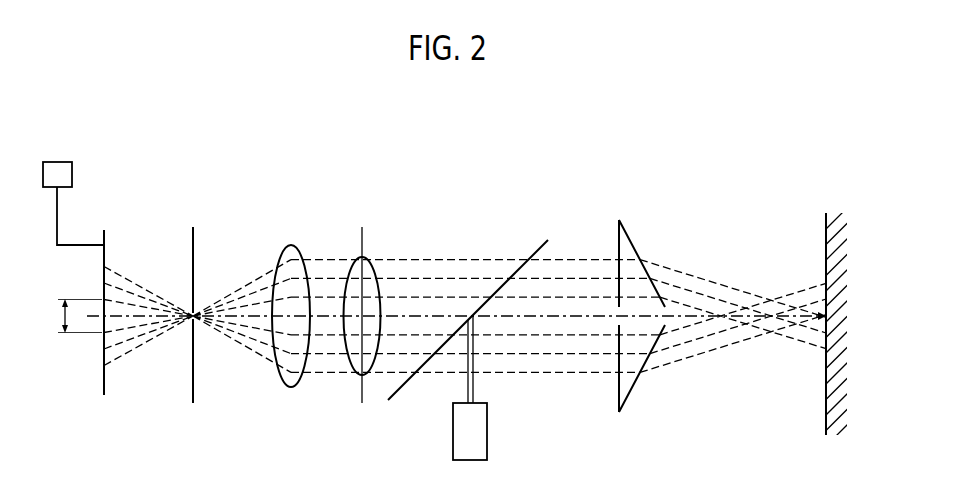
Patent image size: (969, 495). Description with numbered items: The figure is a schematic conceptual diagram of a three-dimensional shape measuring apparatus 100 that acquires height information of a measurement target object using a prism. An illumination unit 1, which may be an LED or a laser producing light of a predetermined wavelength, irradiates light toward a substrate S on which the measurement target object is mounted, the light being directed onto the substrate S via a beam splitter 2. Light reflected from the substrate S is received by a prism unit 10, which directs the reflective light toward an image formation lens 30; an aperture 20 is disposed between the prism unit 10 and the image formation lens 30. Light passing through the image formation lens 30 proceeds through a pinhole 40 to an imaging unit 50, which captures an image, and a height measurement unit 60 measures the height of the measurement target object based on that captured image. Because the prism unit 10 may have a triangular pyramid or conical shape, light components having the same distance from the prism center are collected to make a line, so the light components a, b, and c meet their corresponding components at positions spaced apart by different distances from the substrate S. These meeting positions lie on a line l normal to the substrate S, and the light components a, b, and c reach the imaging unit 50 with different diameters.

The shape measuring apparatus 100 is at (485, 190).
The illumination unit 1 is at (487, 430).
The beam splitter 2 is at (533, 253).
The prism unit 10 is at (618, 232).
The aperture 20 is at (375, 272).
The image formation lens 30 is at (280, 255).
The pinhole 40 is at (190, 382).
The imaging unit 50 is at (105, 383).
The height measurement unit 60 is at (58, 160).
The light component a is at (670, 270).
The light component b is at (688, 293).
The light component c is at (685, 308).
The substrate S is at (844, 333).
The line normal to the substrate l is at (568, 318).